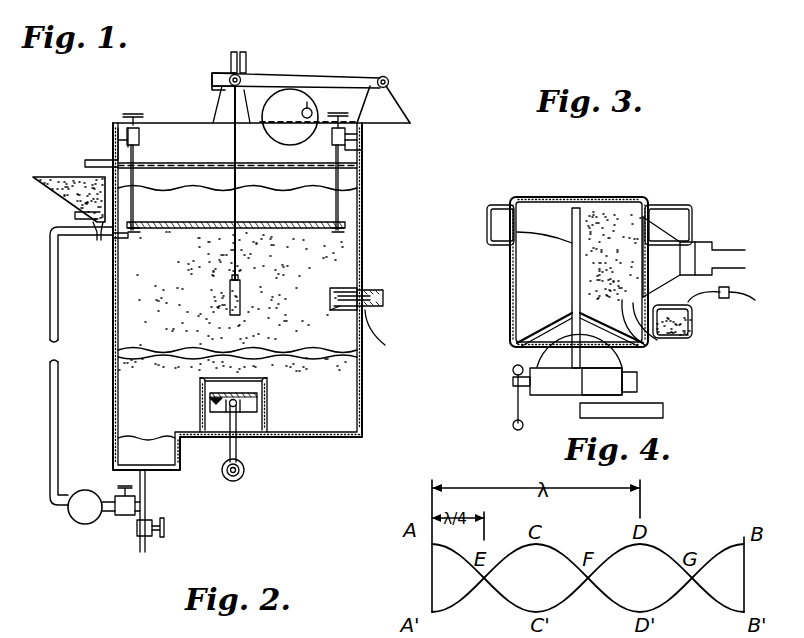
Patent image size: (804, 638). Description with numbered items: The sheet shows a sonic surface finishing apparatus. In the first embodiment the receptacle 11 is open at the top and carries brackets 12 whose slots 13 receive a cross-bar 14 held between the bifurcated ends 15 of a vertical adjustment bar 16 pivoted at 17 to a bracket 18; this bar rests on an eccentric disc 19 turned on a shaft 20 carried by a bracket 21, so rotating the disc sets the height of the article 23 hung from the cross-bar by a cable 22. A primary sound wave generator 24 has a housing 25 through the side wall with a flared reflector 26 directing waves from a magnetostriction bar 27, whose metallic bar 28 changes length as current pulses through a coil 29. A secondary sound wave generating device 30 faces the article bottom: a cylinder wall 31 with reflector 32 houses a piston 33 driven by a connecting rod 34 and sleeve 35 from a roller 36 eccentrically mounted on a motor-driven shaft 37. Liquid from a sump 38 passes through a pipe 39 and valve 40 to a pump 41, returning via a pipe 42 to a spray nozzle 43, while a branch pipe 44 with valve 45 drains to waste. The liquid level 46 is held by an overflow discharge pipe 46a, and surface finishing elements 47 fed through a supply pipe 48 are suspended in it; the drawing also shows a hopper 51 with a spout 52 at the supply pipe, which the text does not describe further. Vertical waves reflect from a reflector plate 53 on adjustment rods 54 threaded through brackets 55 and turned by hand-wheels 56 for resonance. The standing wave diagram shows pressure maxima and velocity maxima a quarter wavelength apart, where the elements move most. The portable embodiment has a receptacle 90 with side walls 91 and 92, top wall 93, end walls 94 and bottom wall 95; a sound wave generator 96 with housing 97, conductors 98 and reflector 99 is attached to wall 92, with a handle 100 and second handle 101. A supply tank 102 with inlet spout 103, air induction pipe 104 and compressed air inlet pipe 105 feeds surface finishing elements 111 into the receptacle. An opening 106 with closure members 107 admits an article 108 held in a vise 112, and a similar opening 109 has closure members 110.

In FIG. 1, the receptacle 11 is at (370, 211).
In FIG. 1, the brackets 12 is at (248, 60).
In FIG. 1, the slot 13 is at (236, 51).
In FIG. 1, the cross-bar 14 is at (231, 75).
In FIG. 1, the bifurcated ends 15 is at (212, 78).
In FIG. 1, the vertical adjustment bar 16 is at (360, 80).
In FIG. 1, the pivot 17 is at (390, 82).
In FIG. 1, the bracket 18 is at (395, 107).
In FIG. 1, the disc 19 is at (285, 97).
In FIG. 1, the shaft 20 is at (308, 107).
In FIG. 1, the bracket 21 is at (328, 120).
In FIG. 1, the cable 22 is at (233, 115).
In FIG. 1, the article 23 is at (230, 302).
In FIG. 1, the primary sound wave generator 24 is at (378, 276).
In FIG. 1, the housing 25 is at (386, 296).
In FIG. 1, the reflector 26 is at (330, 292).
In FIG. 1, the magnetostriction bar 27 is at (328, 317).
In FIG. 1, the metallic bar 28 is at (383, 302).
In FIG. 1, the coil 29 is at (386, 346).
In FIG. 1, the secondary sound wave generating device 30 is at (213, 446).
In FIG. 1, the cylinder wall 31 is at (260, 406).
In FIG. 1, the reflector 32 is at (266, 382).
In FIG. 1, the piston 33 is at (210, 406).
In FIG. 1, the connecting rod 34 is at (238, 450).
In FIG. 1, the sleeve 35 is at (244, 474).
In FIG. 1, the roller 36 is at (227, 479).
In FIG. 1, the shaft 37 is at (236, 477).
In FIG. 1, the sump 38 is at (118, 464).
In FIG. 1, the pipe 39 is at (146, 484).
In FIG. 1, the valve 40 is at (121, 520).
In FIG. 1, the pump 41 is at (72, 521).
In FIG. 1, the pipe 42 is at (58, 396).
In FIG. 1, the spray nozzle 43 is at (127, 240).
In FIG. 1, the branch pipe 44 is at (142, 553).
In FIG. 1, the valve 45 is at (160, 534).
In FIG. 1, the liquid level 46 is at (176, 162).
In FIG. 1, the discharge pipe 46a is at (92, 160).
In FIG. 1, the surface finishing elements 47 is at (310, 250).
In FIG. 1, the supply pipe 48 is at (97, 242).
In FIG. 1, the hopper 51 is at (50, 177).
In FIG. 1, the hopper spout 52 is at (75, 213).
In FIG. 1, the reflector plate 53 is at (272, 229).
In FIG. 1, the adjustment rods 54 is at (118, 158).
In FIG. 1, the brackets 55 is at (128, 135).
In FIG. 1, the hand-wheels 56 is at (133, 113).
In FIG. 3, the receptacle 90 is at (652, 178).
In FIG. 3, the side wall 91 is at (518, 212).
In FIG. 3, the side wall 92 is at (640, 197).
In FIG. 3, the top wall 93 is at (576, 208).
In FIG. 3, the end walls 94 is at (525, 275).
In FIG. 3, the bottom wall 95 is at (540, 336).
In FIG. 3, the sound wave generator 96 is at (710, 218).
In FIG. 3, the housing 97 is at (690, 256).
In FIG. 3, the conductors 98 is at (738, 248).
In FIG. 3, the reflector 99 is at (660, 236).
In FIG. 3, the handle 100 is at (696, 226).
In FIG. 3, the second handle 101 is at (497, 207).
In FIG. 3, the supply tank 102 is at (700, 322).
In FIG. 3, the inlet spout 103 is at (640, 332).
In FIG. 3, the air induction pipe 104 is at (700, 306).
In FIG. 3, the compressed air inlet pipe 105 is at (730, 292).
In FIG. 3, the opening 106 is at (540, 355).
In FIG. 3, the closure members 107 is at (530, 326).
In FIG. 3, the article 108 is at (568, 246).
In FIG. 3, the opening 109 is at (512, 296).
In FIG. 3, the closure members 110 is at (510, 253).
In FIG. 3, the surface finishing elements 111 is at (690, 337).
In FIG. 3, the vise 112 is at (553, 388).